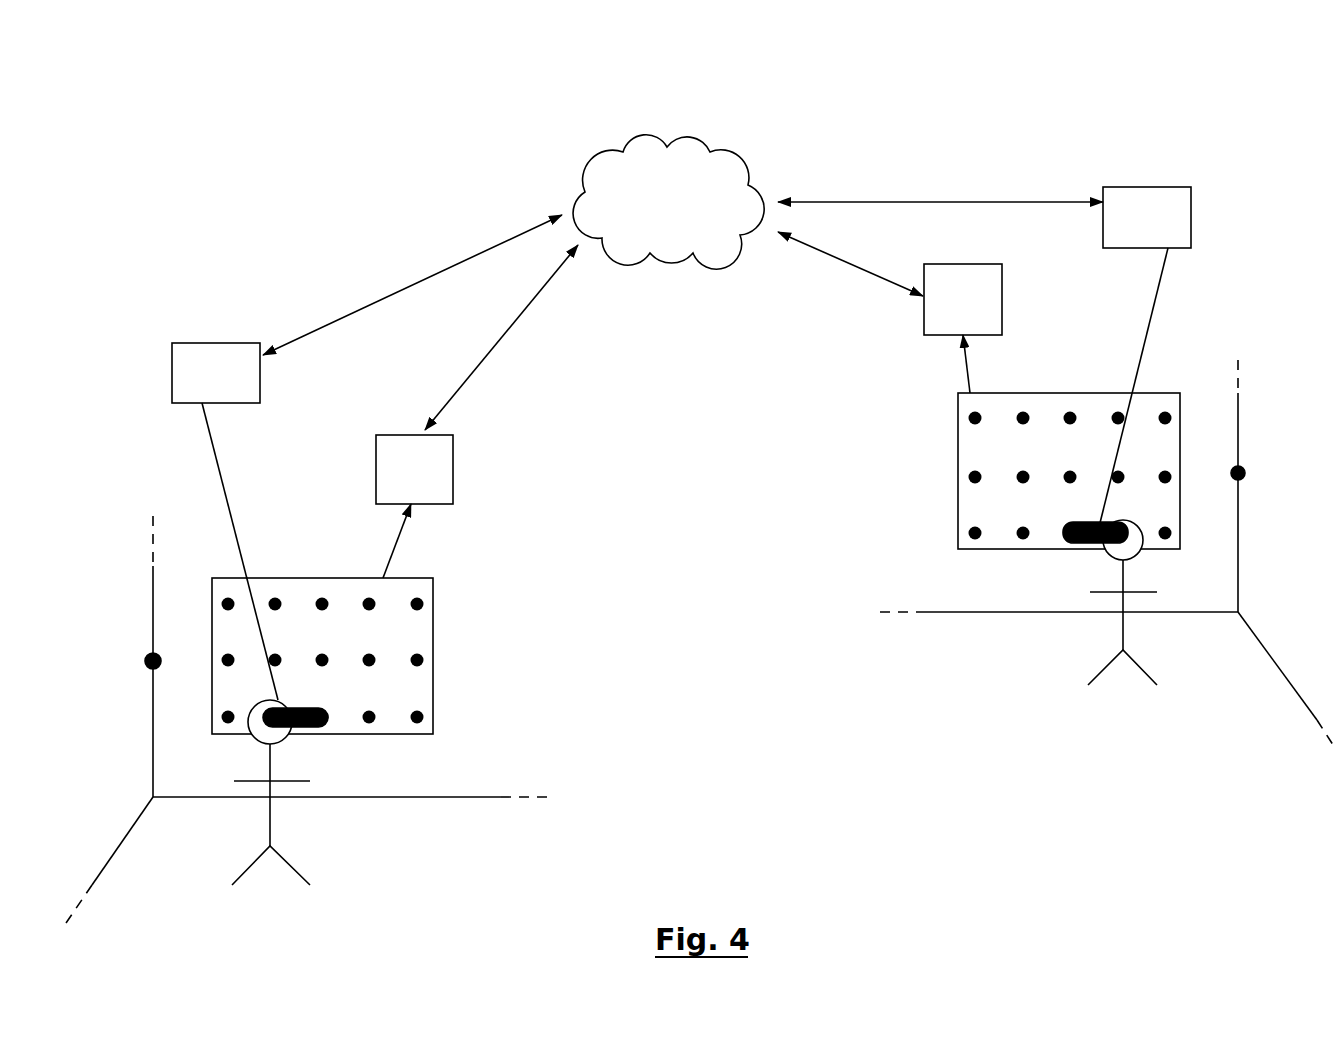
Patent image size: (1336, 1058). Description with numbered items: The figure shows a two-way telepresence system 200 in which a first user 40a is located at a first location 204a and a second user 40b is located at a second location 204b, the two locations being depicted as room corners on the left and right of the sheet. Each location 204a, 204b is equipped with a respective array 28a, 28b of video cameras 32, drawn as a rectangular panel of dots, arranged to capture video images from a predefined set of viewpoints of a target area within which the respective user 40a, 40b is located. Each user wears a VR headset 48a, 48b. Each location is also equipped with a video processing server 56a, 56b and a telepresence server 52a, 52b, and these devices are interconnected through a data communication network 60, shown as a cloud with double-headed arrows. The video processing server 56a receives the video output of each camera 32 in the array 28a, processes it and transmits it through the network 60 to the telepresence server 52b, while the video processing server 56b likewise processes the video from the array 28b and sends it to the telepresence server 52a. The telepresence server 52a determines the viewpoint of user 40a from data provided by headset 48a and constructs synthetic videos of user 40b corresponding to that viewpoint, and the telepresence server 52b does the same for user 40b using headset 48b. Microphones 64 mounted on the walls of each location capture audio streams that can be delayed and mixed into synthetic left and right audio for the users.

The two-way telepresence system 200 is at (272, 105).
The data communication network 60 is at (650, 212).
The telepresence server 52a is at (191, 388).
The telepresence server 52b is at (1123, 233).
The video processing server 56a is at (391, 483).
The video processing server 56b is at (939, 313).
The array of video cameras 28a is at (280, 578).
The array of video cameras 28b is at (1073, 392).
The video cameras 32 is at (417, 717).
The VR headset 48a is at (293, 729).
The VR headset 48b is at (1087, 545).
The first user 40a is at (262, 816).
The second user 40b is at (1130, 627).
The first location 204a is at (382, 852).
The second location 204b is at (963, 668).
The microphones 64 is at (148, 656).